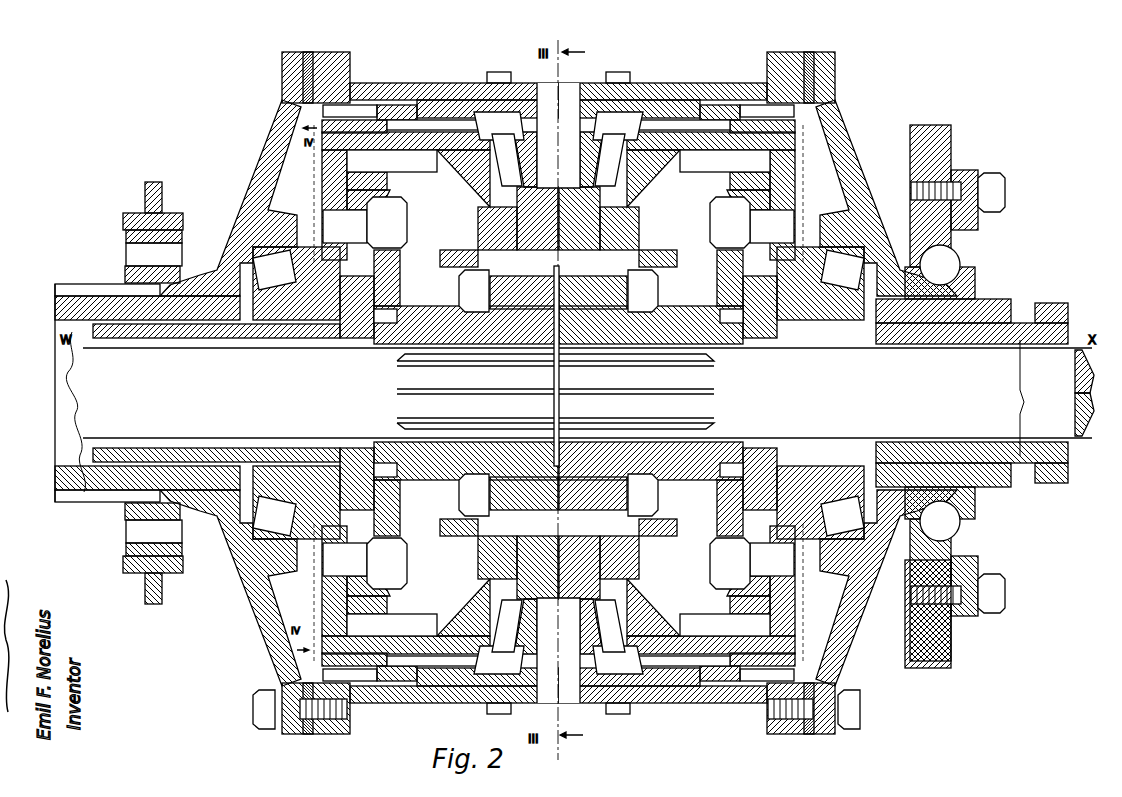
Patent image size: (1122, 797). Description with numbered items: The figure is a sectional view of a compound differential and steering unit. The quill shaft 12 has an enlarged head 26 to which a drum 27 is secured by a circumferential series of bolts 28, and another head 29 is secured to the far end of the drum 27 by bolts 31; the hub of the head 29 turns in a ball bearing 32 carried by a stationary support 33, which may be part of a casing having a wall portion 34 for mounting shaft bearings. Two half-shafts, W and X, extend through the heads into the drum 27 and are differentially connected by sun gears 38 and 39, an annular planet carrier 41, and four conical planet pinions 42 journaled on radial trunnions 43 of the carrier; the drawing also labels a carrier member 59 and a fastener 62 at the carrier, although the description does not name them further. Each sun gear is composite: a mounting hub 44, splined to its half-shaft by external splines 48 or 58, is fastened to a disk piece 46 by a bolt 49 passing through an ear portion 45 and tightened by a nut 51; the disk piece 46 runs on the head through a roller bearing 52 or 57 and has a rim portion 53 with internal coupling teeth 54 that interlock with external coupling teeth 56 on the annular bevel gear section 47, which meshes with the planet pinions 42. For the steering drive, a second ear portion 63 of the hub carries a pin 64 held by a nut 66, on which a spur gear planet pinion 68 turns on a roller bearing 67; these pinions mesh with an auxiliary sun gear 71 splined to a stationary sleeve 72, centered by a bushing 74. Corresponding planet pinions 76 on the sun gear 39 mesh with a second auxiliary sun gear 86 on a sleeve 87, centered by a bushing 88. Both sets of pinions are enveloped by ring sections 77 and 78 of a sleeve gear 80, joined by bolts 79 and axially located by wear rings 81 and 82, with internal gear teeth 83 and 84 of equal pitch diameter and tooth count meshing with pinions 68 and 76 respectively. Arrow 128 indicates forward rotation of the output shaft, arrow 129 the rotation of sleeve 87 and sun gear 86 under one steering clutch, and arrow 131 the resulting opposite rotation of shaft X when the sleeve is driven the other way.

The quill shaft 12 is at (57, 475).
The enlarged head 26 is at (262, 628).
The drum 27 is at (558, 704).
The bolts 28 is at (255, 704).
The head 29 is at (845, 645).
The bolts 31 is at (855, 708).
The ball bearing 32 is at (955, 569).
The stationary support 33 is at (928, 622).
The wall portion 34 is at (158, 586).
The sun gear 38 is at (339, 145).
The sun gear 39 is at (779, 148).
The annular planet carrier 41 is at (593, 192).
The conical planet pinions 42 is at (562, 390).
The radial trunnions 43 is at (568, 92).
The mounting hub 44 is at (472, 274).
The ear portion 45 is at (337, 200).
The disk piece 46 is at (312, 602).
The annular bevel gear section 47 is at (564, 390).
The external splines 48 is at (414, 386).
The bolt 49 is at (407, 220).
The nut 51 is at (404, 240).
The roller bearing 52 is at (274, 384).
The rim portion 53 is at (558, 393).
The coupling teeth 54 is at (540, 125).
The external coupling teeth 56 is at (538, 662).
The roller bearing 57 is at (842, 386).
The external splines 58 is at (705, 386).
The top cover plate 59 is at (653, 83).
The cover bolt 62 is at (499, 72).
The ear portion 63 is at (428, 592).
The pin 64 is at (558, 557).
The nut 66 is at (430, 549).
The roller bearing 67 is at (352, 570).
The spur gear planet pinion 68 is at (355, 444).
The auxiliary sun gear 71 is at (357, 310).
The sleeve 72 is at (151, 443).
The bushing 74 is at (263, 324).
The auxiliary spur gear planet pinions 76 is at (755, 442).
The ring section 77 is at (481, 573).
The ring section 78 is at (621, 569).
The bolts 79 is at (640, 497).
The sleeve gear 80 is at (634, 591).
The wear ring 81 is at (511, 228).
The wear ring 82 is at (604, 228).
The internal gear teeth 83 is at (397, 178).
The internal gear teeth 84 is at (724, 185).
The second auxiliary sun gear 86 is at (762, 335).
The sleeve 87 is at (912, 333).
The bushing 88 is at (834, 326).
The arrow 128 is at (90, 430).
The arrow 129 is at (1028, 424).
The arrow 131 is at (573, 408).